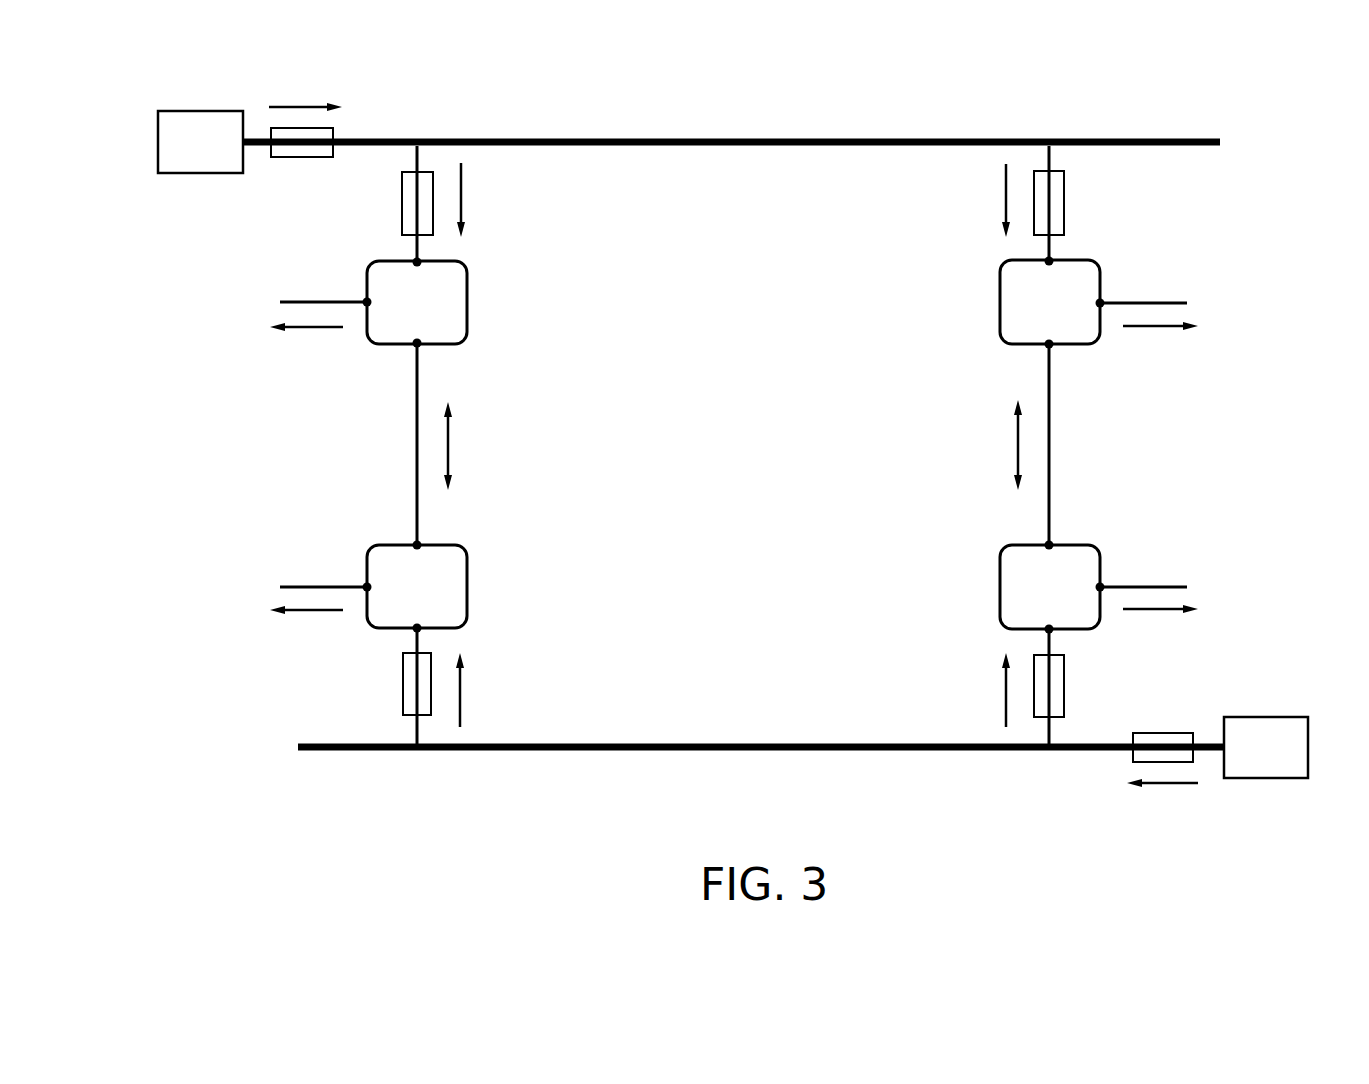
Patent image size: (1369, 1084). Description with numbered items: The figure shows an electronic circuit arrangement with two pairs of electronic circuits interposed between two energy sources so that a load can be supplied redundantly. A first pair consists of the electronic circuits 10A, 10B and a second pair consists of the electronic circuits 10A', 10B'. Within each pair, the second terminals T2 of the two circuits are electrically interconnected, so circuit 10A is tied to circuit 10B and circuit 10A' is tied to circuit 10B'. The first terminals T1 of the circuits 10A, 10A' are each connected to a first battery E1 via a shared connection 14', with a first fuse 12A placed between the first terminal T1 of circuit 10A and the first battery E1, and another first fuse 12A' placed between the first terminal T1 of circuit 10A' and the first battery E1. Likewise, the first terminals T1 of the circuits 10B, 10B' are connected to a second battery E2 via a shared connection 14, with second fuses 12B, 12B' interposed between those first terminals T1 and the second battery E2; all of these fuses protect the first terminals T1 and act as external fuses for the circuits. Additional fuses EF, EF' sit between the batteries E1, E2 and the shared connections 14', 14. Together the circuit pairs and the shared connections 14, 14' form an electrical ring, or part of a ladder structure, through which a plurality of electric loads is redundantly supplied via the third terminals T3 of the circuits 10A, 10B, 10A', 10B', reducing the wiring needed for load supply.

The shared connection 14' is at (731, 80).
The shared connection 14 is at (761, 806).
The first battery E1 is at (180, 161).
The second battery E2 is at (1246, 766).
The additional fuse EF is at (244, 105).
The additional fuse EF' is at (1223, 725).
The first fuse 12A' is at (449, 143).
The first fuse 12A is at (1020, 143).
The second fuse 12B' is at (330, 693).
The second fuse 12B is at (1032, 739).
The electronic circuit 10A' is at (417, 302).
The electronic circuit 10A is at (1050, 302).
The electronic circuit 10B' is at (417, 586).
The electronic circuit 10B is at (1050, 587).
The first terminal T1 is at (417, 262).
The second terminal T2 is at (417, 344).
The third terminal T3 is at (367, 302).